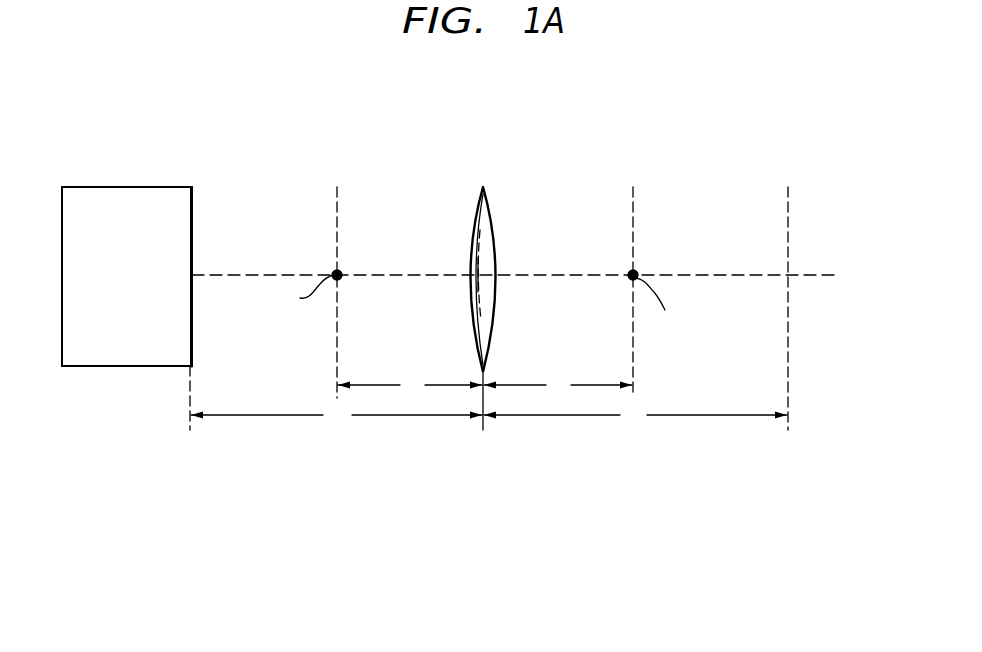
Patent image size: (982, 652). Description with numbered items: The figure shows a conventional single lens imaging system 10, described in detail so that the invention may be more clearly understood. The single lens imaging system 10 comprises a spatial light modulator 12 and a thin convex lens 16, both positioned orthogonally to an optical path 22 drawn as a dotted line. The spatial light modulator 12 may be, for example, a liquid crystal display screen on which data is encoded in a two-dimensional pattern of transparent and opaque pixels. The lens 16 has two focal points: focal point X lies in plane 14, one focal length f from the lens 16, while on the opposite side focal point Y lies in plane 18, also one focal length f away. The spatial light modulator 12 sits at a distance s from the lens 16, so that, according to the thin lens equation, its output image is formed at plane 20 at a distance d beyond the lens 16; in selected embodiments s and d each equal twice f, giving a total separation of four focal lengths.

The single lens imaging system 10 is at (580, 114).
The spatial light modulator 12 is at (126, 186).
The plane 14 is at (340, 186).
The thin convex lens 16 is at (486, 186).
The plane 18 is at (636, 186).
The plane 20 is at (791, 186).
The optical path 22 is at (812, 280).